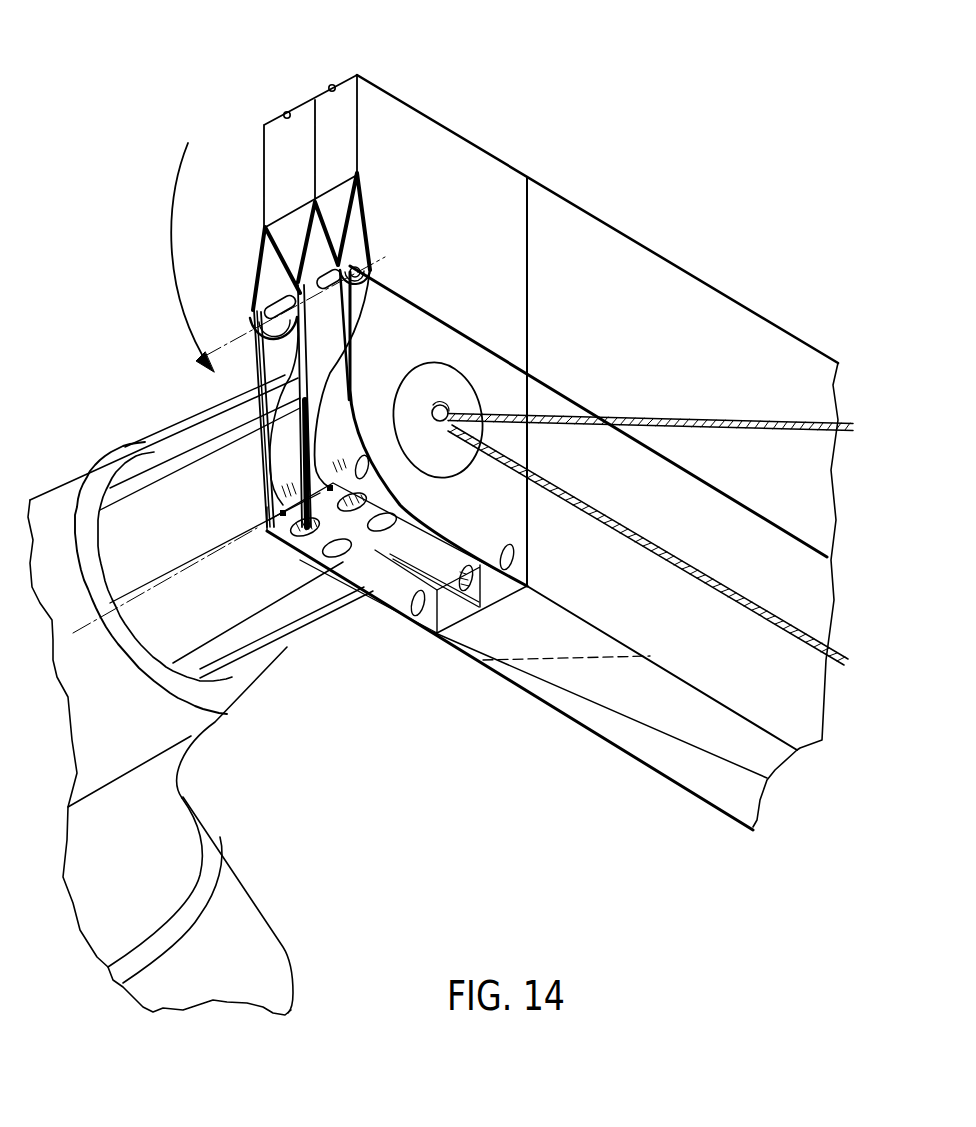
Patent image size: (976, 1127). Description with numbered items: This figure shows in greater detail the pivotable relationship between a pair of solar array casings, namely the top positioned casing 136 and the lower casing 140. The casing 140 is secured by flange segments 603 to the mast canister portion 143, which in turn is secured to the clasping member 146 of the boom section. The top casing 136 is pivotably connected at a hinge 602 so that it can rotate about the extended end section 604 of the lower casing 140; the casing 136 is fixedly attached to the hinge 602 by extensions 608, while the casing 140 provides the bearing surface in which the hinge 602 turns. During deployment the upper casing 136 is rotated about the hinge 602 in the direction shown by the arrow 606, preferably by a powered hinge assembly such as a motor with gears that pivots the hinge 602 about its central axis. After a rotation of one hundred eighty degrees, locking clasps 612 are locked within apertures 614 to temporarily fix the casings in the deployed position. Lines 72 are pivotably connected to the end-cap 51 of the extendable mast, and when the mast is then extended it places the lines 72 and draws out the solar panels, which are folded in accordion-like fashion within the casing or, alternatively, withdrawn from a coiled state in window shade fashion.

The end-cap 51 is at (450, 464).
The lines 72 is at (724, 418).
The solar array casing 136 is at (690, 371).
The lower casing 140 is at (717, 633).
The mast canister portion 143 is at (290, 630).
The clasping member 146 is at (228, 897).
The hinge 602 is at (365, 266).
The flange segments 603 is at (282, 494).
The extended end section 604 is at (380, 323).
The arrow 606 is at (172, 249).
The extensions 608 is at (353, 227).
The locking clasps 612 is at (290, 113).
The apertures 614 is at (328, 494).